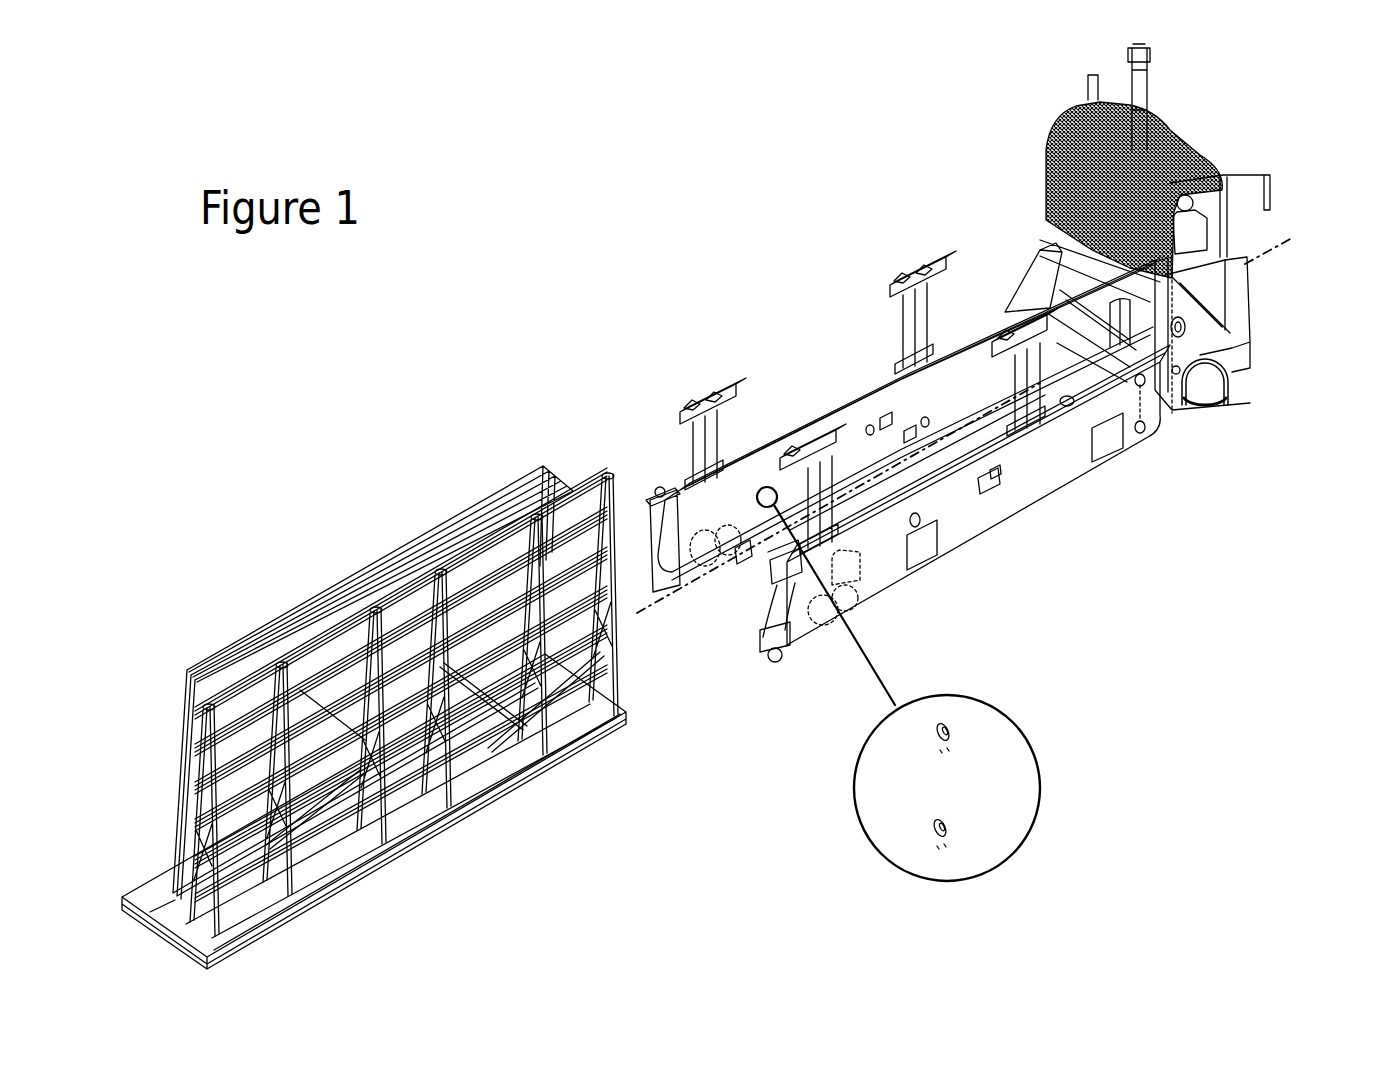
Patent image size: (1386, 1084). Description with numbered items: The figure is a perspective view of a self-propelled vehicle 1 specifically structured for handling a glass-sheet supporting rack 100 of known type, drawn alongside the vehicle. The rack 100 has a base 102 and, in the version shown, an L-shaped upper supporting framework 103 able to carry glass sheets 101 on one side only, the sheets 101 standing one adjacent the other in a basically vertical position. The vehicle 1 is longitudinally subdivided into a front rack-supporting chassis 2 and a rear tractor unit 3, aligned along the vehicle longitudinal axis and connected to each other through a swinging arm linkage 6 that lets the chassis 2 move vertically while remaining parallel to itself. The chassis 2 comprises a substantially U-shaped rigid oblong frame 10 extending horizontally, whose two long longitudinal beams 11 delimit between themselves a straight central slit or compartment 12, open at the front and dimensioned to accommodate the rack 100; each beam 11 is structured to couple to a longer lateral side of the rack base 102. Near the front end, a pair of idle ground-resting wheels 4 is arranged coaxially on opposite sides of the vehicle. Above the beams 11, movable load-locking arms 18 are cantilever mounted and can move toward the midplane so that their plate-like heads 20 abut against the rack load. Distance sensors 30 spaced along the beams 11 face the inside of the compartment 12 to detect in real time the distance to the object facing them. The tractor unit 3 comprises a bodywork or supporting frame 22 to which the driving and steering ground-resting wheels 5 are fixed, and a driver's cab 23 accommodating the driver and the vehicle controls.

The self-propelled vehicle 1 is at (667, 222).
The front rack-supporting chassis 2 is at (930, 562).
The rear tractor unit 3 is at (1272, 300).
The ground-resting wheels 4 is at (723, 563).
The driving ground-resting wheels 5 is at (1205, 398).
The swinging arm linkage 6 is at (1012, 258).
The rigid oblong frame 10 is at (853, 392).
The longitudinal beams 11 is at (787, 430).
The central slit or compartment 12 is at (713, 525).
The movable load-locking arms 18 is at (686, 383).
The plate-like head 20 is at (683, 418).
The bodywork or supporting frame 22 is at (1220, 342).
The driver's cab 23 is at (1047, 128).
The distance sensors 30 is at (948, 823).
The glass-sheet supporting rack 100 is at (447, 840).
The glass sheets 101 is at (380, 576).
The base 102 is at (321, 897).
The L-shaped upper supporting framework 103 is at (459, 735).